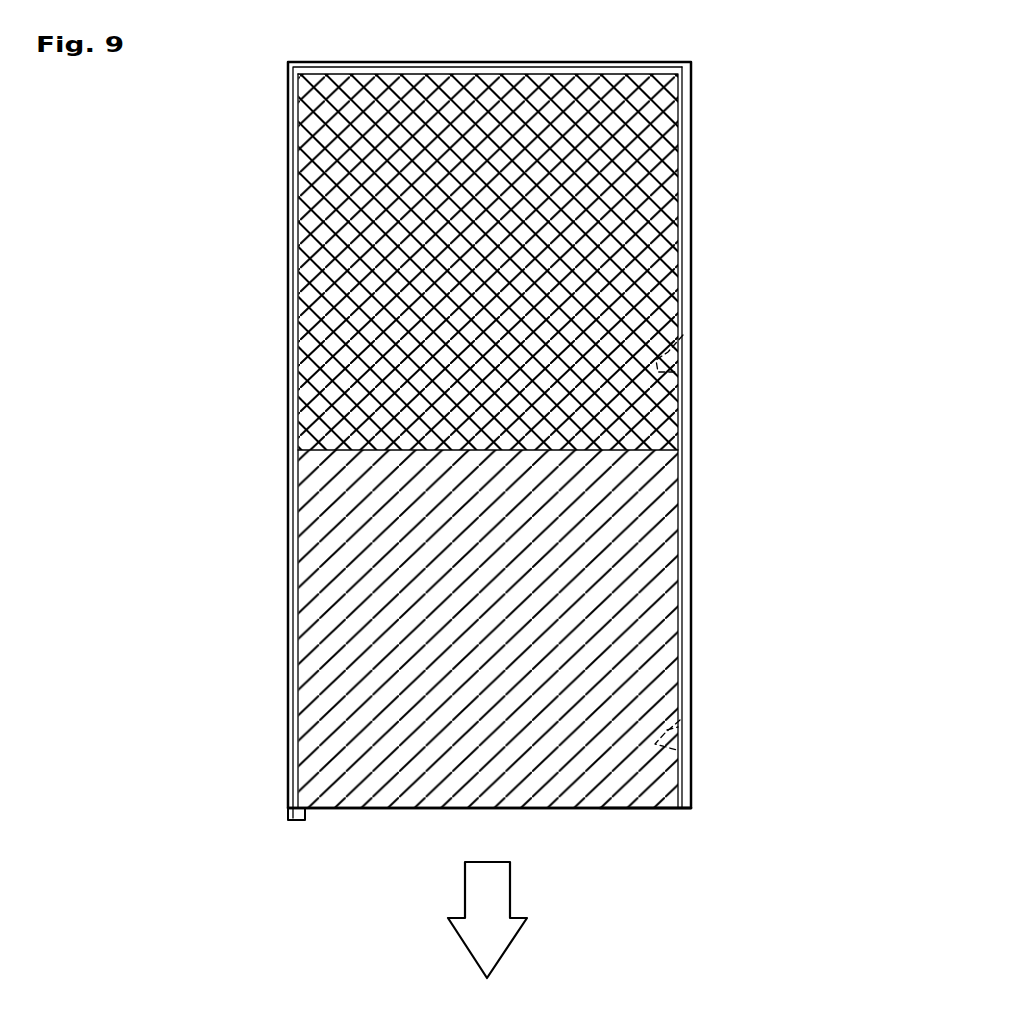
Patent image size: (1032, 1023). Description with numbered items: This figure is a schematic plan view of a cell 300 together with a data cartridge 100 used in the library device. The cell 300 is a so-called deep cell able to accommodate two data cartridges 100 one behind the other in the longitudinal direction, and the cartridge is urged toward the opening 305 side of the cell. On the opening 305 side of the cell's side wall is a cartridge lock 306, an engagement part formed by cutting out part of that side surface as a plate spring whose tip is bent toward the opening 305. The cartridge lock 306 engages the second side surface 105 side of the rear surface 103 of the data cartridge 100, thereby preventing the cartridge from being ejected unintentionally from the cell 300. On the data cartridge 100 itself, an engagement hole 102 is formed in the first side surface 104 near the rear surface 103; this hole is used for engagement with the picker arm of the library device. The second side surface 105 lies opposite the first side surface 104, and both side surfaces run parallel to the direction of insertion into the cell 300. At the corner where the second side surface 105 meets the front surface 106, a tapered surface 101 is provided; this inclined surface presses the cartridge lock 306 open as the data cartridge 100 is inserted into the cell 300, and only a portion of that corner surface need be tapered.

The data cartridge 100 is at (657, 217).
The tapered surface 101 is at (322, 90).
The engagement hole 102 is at (685, 335).
The rear surface 103 is at (405, 808).
The first side surface 104 is at (680, 612).
The second side surface 105 is at (297, 585).
The front surface 106 is at (605, 447).
The cell 300 is at (692, 696).
The opening 305 is at (626, 824).
The cartridge lock 306 is at (295, 819).